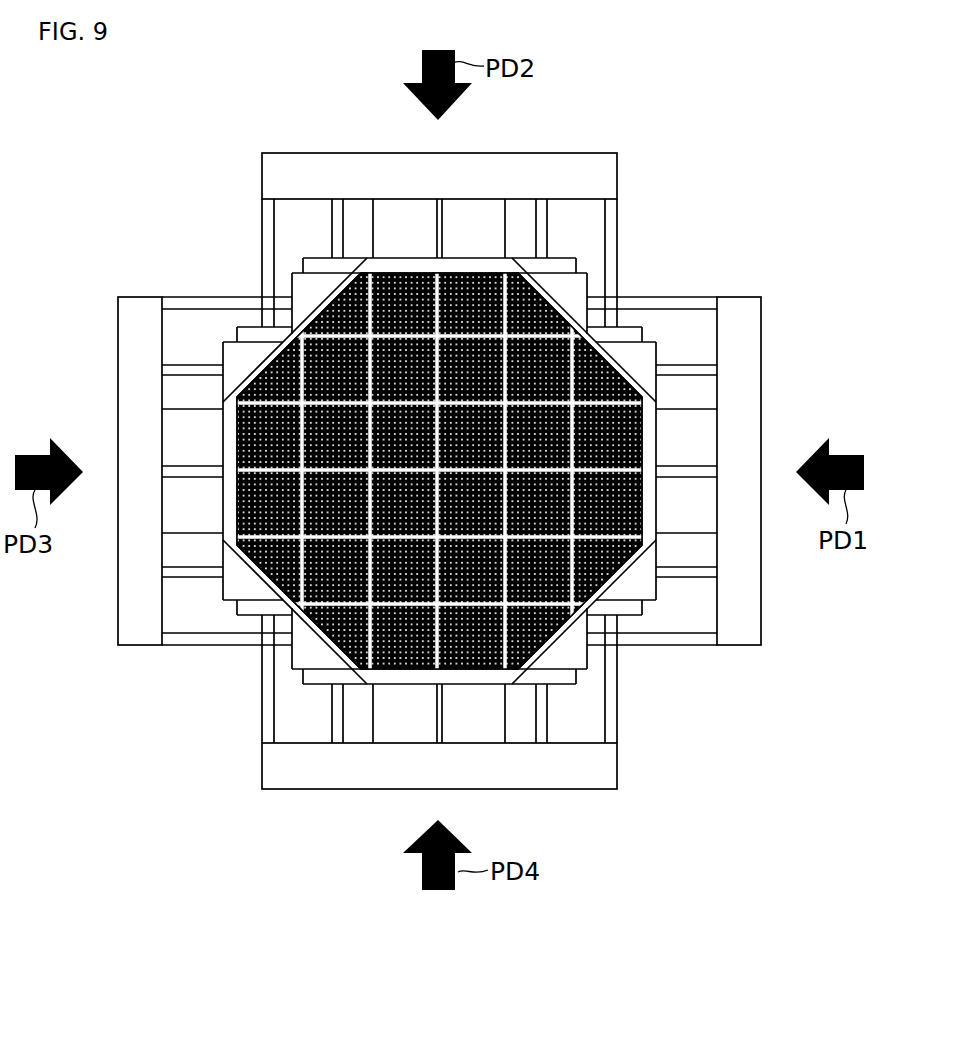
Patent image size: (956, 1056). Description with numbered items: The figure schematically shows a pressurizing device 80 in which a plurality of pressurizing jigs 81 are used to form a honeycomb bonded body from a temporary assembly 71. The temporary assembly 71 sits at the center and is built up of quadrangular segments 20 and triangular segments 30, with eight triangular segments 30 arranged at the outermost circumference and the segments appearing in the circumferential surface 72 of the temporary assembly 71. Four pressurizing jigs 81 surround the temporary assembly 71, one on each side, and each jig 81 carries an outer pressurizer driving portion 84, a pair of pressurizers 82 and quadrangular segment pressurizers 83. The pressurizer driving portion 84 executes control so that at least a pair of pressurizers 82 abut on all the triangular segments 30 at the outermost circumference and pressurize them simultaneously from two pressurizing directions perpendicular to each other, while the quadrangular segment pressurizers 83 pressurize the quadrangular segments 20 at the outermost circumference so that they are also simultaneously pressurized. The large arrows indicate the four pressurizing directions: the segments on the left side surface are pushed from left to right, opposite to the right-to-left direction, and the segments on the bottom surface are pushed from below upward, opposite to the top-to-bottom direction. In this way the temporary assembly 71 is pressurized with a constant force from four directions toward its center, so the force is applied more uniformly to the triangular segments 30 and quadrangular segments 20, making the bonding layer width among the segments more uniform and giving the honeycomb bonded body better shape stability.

The quadrangular segment 20 is at (400, 273).
The triangular segment 30 is at (338, 298).
The temporary assembly 71 is at (620, 276).
The circumferential surface 72 is at (648, 522).
The pressurizing device 80 is at (465, 471).
The pressurizing jig 81 is at (465, 471).
The pressurizer 82 is at (228, 580).
The quadrangular segment pressurizer 83 is at (170, 432).
The pressurizer driving portion 84 is at (598, 168).